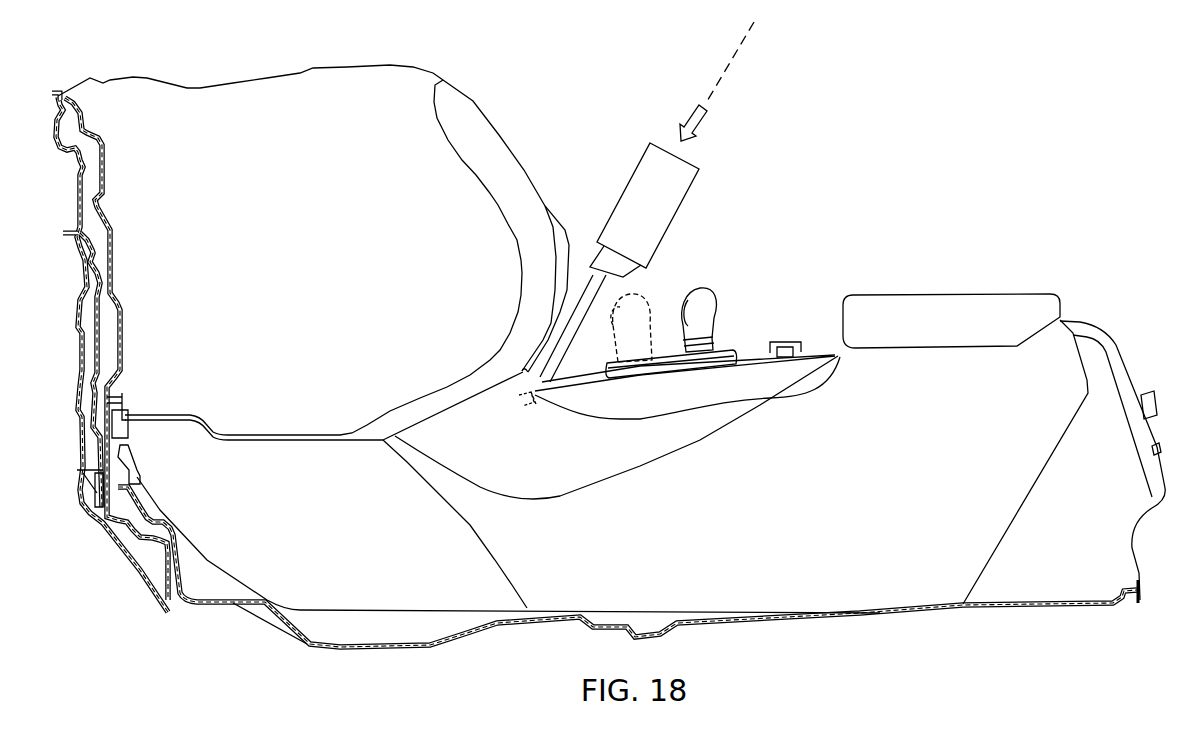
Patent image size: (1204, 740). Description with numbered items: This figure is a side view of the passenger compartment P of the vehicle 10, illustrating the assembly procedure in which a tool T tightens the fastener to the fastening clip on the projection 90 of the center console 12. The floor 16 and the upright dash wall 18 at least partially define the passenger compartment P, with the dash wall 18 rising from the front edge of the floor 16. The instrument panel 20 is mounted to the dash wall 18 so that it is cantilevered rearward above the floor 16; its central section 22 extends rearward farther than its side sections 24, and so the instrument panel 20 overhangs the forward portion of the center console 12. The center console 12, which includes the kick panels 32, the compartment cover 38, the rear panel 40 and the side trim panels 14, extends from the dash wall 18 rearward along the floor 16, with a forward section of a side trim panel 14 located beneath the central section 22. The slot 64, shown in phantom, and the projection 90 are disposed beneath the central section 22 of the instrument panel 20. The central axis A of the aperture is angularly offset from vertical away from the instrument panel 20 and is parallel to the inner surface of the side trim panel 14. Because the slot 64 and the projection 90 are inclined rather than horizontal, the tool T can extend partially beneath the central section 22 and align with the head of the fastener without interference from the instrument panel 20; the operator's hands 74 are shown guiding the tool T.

The vehicle 10 is at (886, 218).
The center console 12 is at (822, 352).
The side trim panel 14 is at (656, 438).
The floor 16 is at (1076, 601).
The dash wall 18 is at (118, 453).
The instrument panel 20 is at (475, 108).
The central section 22 is at (566, 240).
The side section 24 is at (503, 200).
The kick panel 32 is at (418, 574).
The compartment cover 38 is at (942, 326).
The rear panel 40 is at (1097, 331).
The slot 64 is at (562, 421).
The projection 90 is at (545, 408).
The hands of operator 74 is at (708, 288).
The tool T is at (656, 201).
The central axis A is at (748, 33).
The passenger compartment P is at (766, 225).